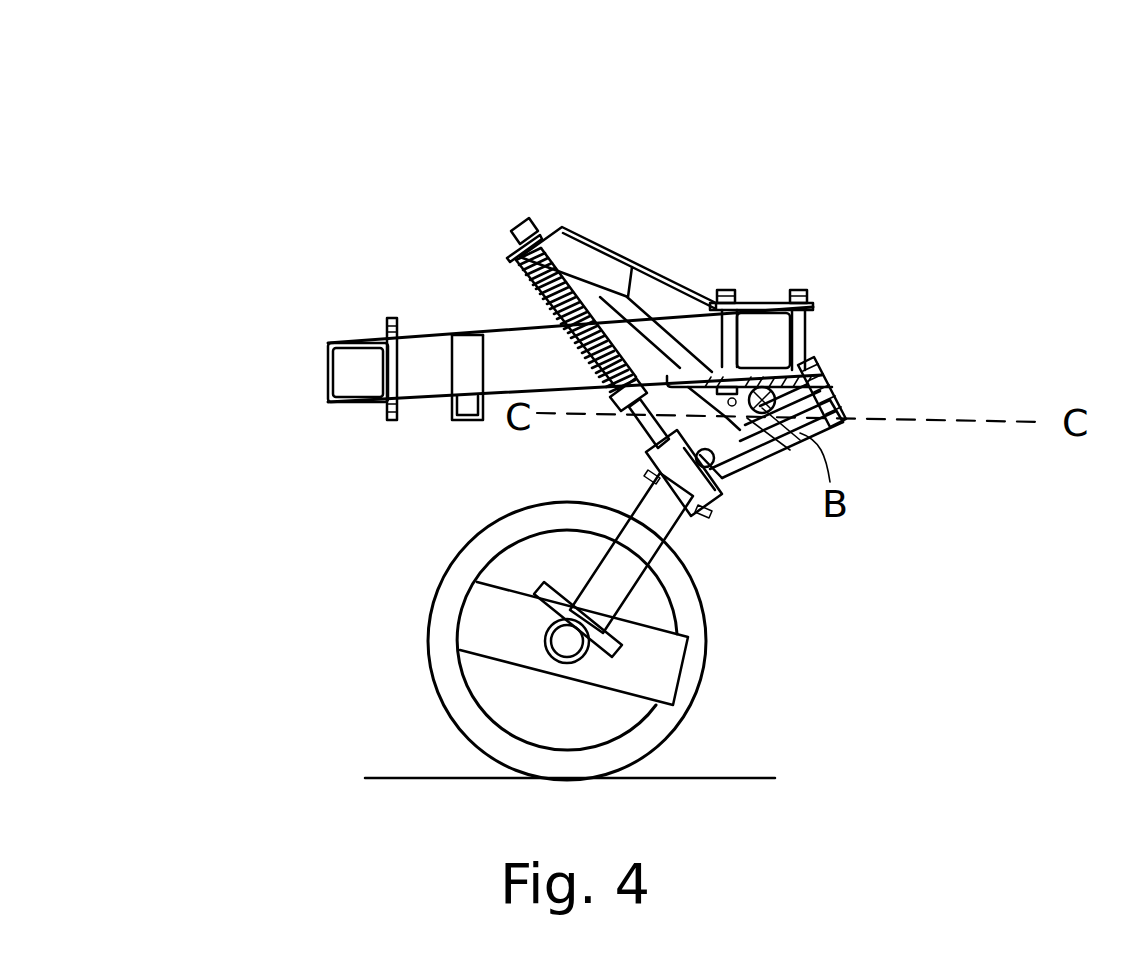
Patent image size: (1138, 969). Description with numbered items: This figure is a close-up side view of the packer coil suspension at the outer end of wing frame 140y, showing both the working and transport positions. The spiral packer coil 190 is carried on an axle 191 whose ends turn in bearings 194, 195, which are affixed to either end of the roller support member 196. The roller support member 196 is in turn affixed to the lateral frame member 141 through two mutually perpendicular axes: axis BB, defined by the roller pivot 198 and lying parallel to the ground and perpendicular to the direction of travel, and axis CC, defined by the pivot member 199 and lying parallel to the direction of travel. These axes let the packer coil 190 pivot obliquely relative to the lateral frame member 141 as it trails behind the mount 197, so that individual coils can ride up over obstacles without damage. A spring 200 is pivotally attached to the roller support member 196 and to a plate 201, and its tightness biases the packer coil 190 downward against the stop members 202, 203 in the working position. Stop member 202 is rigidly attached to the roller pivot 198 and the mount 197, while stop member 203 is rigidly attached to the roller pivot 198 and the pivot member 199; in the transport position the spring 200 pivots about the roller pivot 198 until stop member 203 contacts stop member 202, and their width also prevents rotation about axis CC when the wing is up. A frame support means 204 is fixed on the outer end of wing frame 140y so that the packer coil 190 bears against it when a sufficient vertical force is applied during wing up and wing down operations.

The outer end of wing frame section 140y is at (491, 148).
The lateral frame member 141 is at (338, 367).
The packer coil 190 is at (442, 665).
The axle 191 is at (683, 683).
The bearing 194 is at (567, 641).
The bearing 195 is at (578, 619).
The roller support member 196 is at (672, 527).
The mount 197 is at (753, 323).
The roller pivot 198 is at (775, 392).
The pivot member 199 is at (833, 403).
The spring 200 is at (522, 274).
The plate 201 is at (565, 240).
The stop member 202 is at (872, 378).
The stop member 203 is at (822, 392).
The frame support means 204 is at (467, 418).